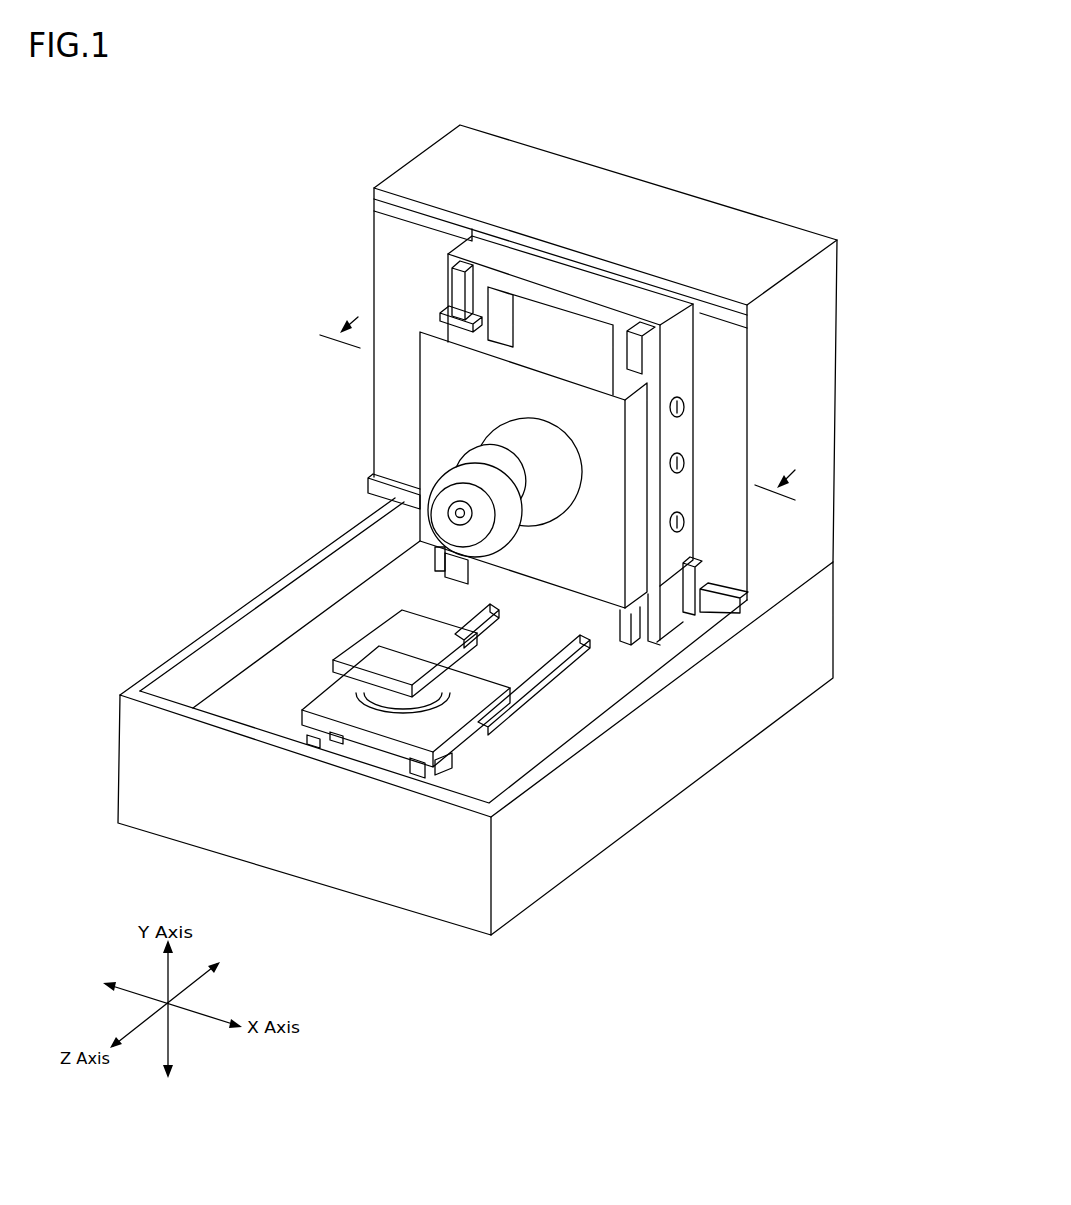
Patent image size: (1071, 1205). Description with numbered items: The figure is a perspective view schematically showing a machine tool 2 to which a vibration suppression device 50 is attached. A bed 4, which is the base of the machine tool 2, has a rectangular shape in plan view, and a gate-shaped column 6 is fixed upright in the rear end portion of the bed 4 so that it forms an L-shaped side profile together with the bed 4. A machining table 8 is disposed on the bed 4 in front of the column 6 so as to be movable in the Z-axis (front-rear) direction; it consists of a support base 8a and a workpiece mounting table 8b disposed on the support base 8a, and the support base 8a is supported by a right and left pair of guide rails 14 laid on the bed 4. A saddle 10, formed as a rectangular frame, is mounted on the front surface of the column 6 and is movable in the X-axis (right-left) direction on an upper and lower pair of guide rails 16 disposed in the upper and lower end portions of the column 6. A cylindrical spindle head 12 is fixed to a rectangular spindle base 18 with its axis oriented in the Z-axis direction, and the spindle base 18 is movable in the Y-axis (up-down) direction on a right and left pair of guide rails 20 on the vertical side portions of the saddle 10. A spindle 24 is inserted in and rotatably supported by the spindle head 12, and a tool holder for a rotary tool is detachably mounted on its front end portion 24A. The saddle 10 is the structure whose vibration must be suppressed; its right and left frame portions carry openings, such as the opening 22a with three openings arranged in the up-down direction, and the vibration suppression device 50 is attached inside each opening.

The machine tool 2 is at (333, 917).
The bed 4 is at (648, 782).
The column 6 is at (787, 357).
The machining table 8 is at (323, 690).
The support base 8a is at (465, 733).
The workpiece mounting table 8b is at (397, 648).
The saddle 10 is at (683, 535).
The spindle head 12 is at (505, 433).
The guide rails 14 is at (545, 680).
The guide rails 16 is at (392, 223).
The spindle base 18 is at (458, 392).
The guide rails 20 is at (464, 290).
The opening 22a is at (678, 473).
The spindle 24 is at (492, 480).
The front end portion 24A is at (448, 513).
The vibration suppression device 50 is at (809, 477).